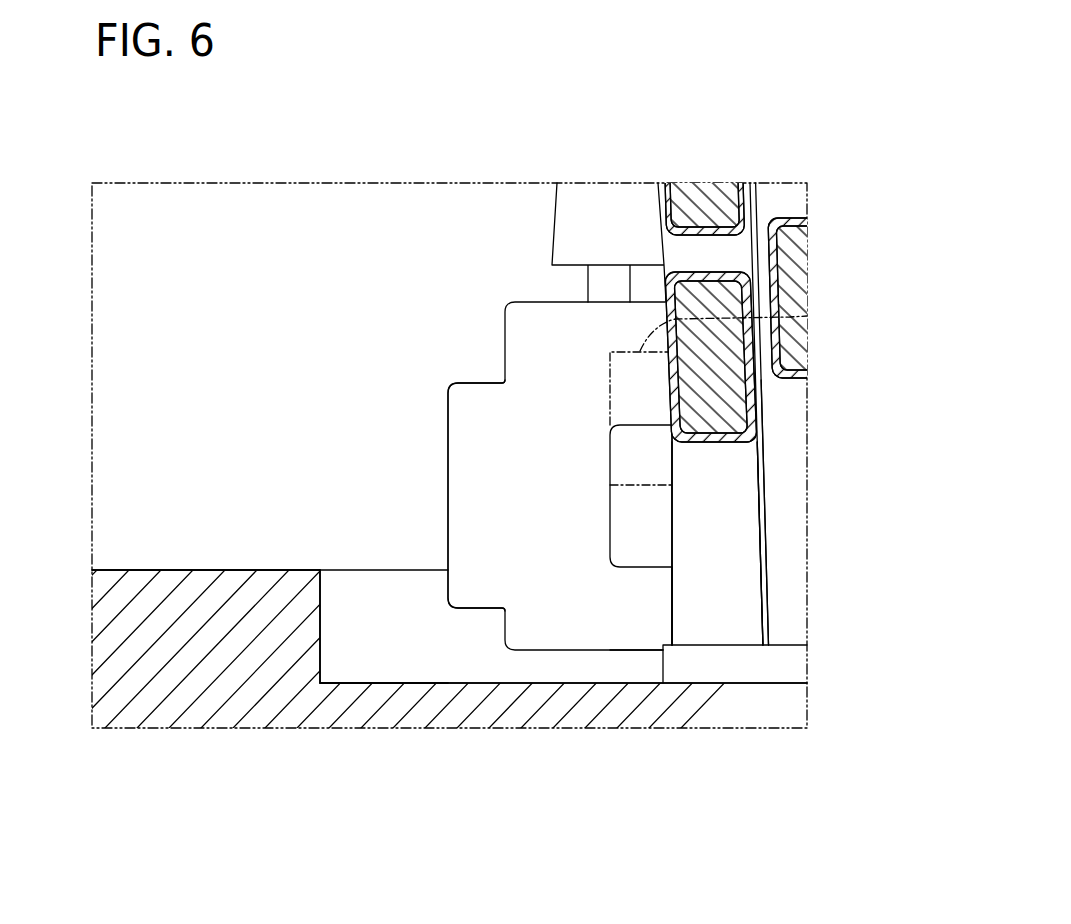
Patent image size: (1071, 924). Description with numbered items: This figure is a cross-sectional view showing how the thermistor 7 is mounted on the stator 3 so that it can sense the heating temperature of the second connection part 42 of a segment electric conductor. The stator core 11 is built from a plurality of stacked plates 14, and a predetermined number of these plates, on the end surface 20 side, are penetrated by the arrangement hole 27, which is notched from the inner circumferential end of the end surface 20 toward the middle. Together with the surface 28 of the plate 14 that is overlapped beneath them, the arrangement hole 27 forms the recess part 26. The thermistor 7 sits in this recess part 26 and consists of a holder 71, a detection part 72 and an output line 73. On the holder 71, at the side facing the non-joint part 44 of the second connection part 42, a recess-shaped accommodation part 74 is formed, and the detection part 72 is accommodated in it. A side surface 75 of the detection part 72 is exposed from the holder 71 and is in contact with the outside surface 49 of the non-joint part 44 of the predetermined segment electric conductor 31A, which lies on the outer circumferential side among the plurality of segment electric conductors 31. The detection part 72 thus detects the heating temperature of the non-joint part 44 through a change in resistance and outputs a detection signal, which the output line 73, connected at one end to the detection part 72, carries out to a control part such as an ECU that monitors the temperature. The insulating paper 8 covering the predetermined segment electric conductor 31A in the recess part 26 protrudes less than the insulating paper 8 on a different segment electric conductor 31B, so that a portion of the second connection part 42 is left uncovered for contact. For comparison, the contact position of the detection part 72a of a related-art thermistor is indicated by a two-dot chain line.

The stator 3 is at (82, 632).
The thermistor 7 is at (506, 298).
The insulating paper 8 is at (792, 663).
The stator core 11 is at (131, 566).
The plate 14 is at (417, 705).
The end surface 20 is at (186, 568).
The recess part 26 is at (383, 483).
The arrangement hole 27 is at (396, 606).
The surface 28 is at (360, 680).
The segment electric conductor 31 is at (905, 478).
The predetermined segment electric conductor 31A is at (766, 546).
The different segment electric conductor 31B is at (788, 495).
The second connection part 42 is at (740, 597).
The non-joint part 44 is at (841, 543).
The outside surface 49 is at (662, 580).
The holder 71 is at (478, 403).
The detection part 72 is at (628, 552).
The detection part of the thermistor of the related art 72a is at (807, 316).
The output line 73 is at (603, 212).
The accommodation part 74 is at (620, 512).
The side surface 75 is at (673, 462).